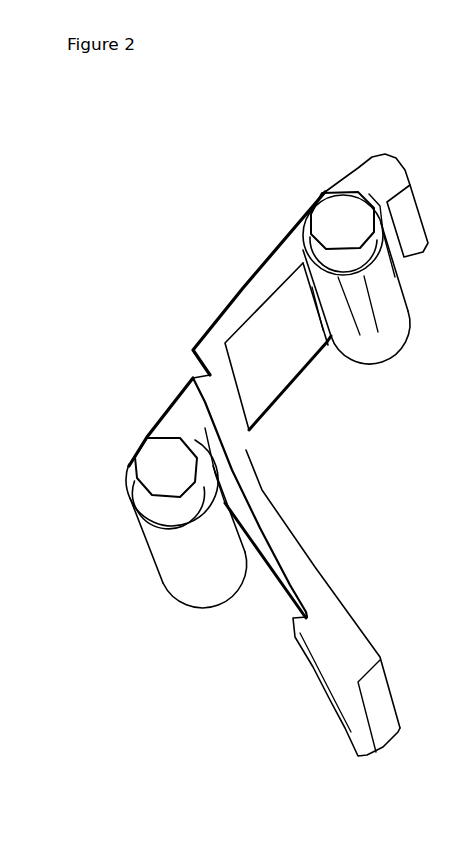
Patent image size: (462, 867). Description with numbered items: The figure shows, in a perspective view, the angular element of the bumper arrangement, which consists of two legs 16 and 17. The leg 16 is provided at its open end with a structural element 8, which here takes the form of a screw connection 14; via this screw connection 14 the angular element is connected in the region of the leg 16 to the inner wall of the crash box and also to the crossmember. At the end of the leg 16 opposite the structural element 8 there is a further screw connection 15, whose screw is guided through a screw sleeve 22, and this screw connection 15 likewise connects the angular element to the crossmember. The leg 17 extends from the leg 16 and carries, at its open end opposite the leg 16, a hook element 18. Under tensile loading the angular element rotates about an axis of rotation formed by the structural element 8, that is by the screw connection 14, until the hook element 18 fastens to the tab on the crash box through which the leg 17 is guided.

The structural element 8 is at (346, 228).
The screw connection 14 is at (338, 220).
The further screw connection 15 is at (165, 472).
The leg 16 is at (258, 280).
The leg 17 is at (283, 520).
The hook element 18 is at (313, 637).
The screw sleeve 22 is at (200, 547).